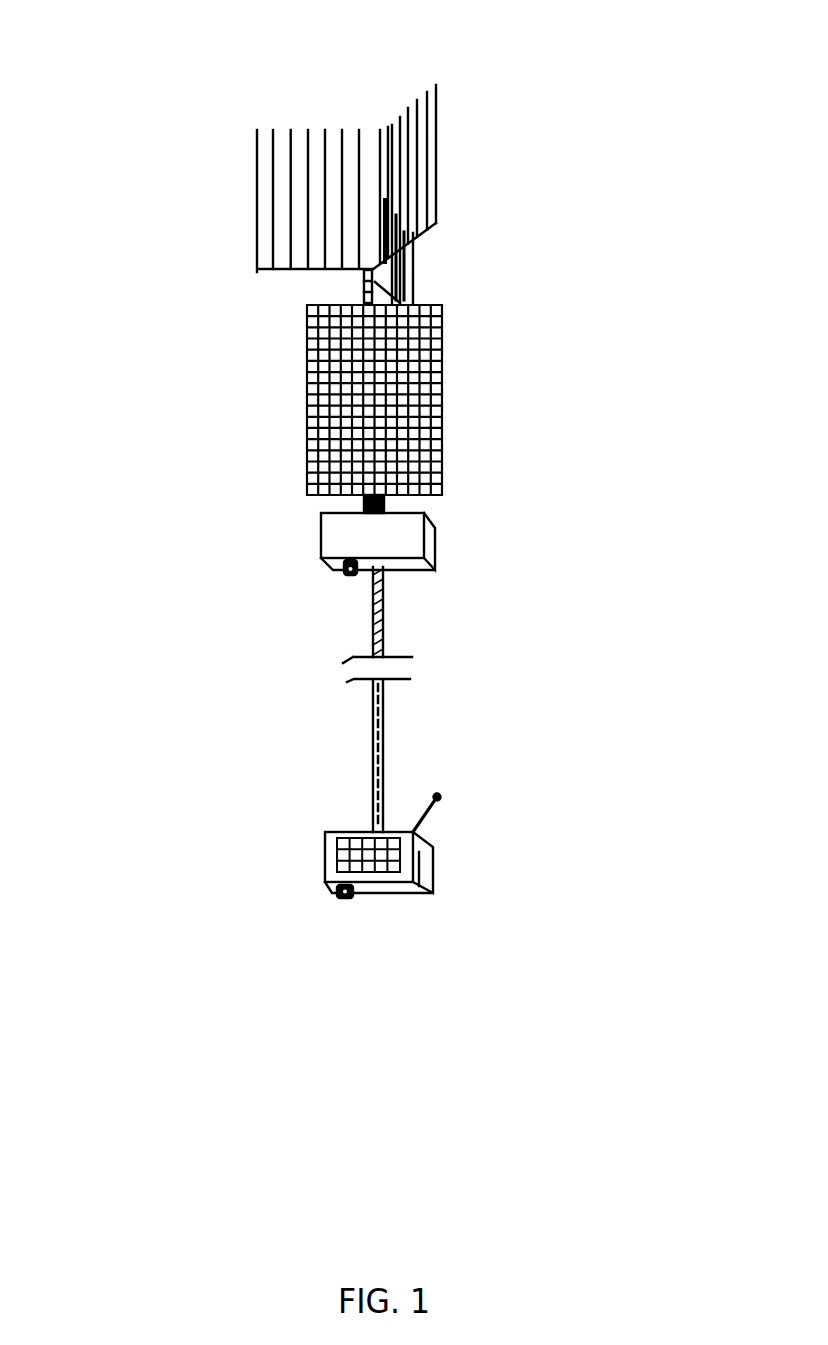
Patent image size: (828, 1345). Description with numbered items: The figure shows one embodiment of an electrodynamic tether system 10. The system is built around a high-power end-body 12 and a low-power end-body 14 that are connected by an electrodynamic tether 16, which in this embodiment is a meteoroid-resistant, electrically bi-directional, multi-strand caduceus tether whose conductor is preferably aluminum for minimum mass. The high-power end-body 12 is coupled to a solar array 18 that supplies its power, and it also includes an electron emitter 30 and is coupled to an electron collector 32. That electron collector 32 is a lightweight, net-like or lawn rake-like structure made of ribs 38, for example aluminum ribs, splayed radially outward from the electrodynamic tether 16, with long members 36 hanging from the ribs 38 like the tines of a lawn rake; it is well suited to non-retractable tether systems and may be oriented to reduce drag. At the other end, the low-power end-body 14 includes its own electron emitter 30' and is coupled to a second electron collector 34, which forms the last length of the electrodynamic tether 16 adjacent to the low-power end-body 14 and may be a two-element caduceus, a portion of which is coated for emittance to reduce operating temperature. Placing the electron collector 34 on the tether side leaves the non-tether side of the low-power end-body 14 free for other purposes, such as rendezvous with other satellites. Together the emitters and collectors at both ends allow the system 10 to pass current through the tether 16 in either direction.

The electrodynamic tether system 10 is at (165, 118).
The high-power end-body 12 is at (448, 550).
The low-power end-body 14 is at (447, 864).
The electrodynamic tether 16 is at (364, 288).
The solar array 18 is at (305, 409).
The electron emitter 30 is at (276, 646).
The electron emitter 30' is at (268, 970).
The electron collector 32 is at (247, 239).
The electron collector 34 is at (383, 766).
The long members 36 is at (273, 202).
The ribs 38 is at (437, 226).